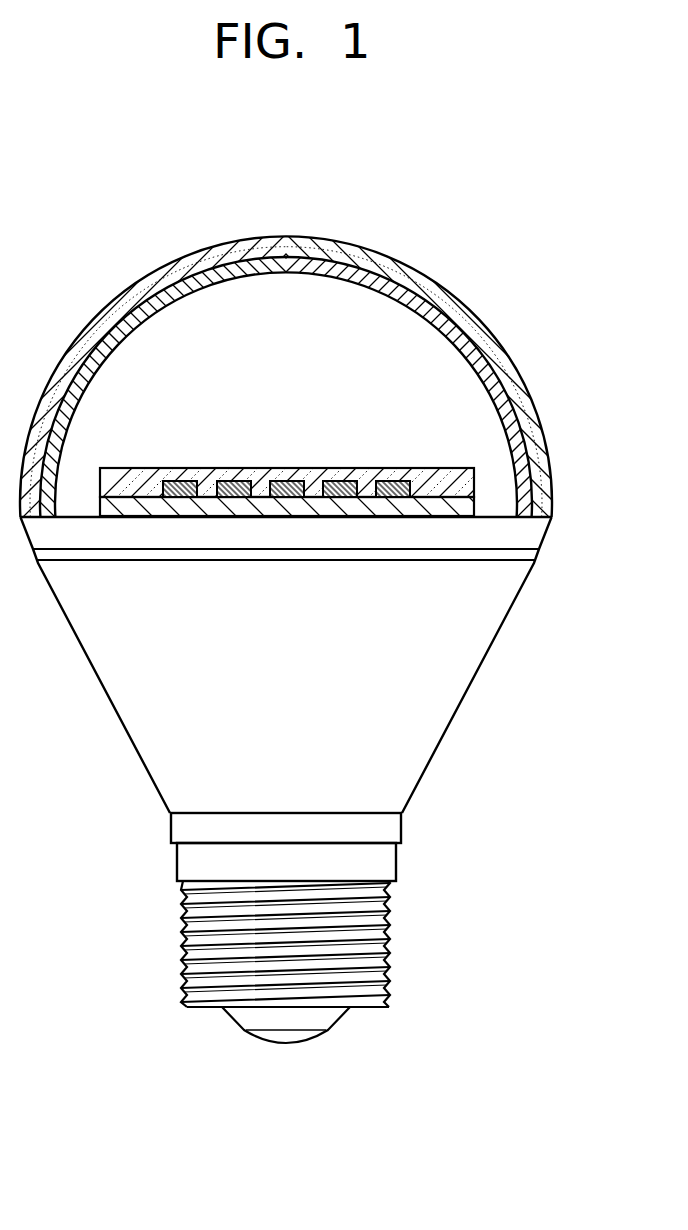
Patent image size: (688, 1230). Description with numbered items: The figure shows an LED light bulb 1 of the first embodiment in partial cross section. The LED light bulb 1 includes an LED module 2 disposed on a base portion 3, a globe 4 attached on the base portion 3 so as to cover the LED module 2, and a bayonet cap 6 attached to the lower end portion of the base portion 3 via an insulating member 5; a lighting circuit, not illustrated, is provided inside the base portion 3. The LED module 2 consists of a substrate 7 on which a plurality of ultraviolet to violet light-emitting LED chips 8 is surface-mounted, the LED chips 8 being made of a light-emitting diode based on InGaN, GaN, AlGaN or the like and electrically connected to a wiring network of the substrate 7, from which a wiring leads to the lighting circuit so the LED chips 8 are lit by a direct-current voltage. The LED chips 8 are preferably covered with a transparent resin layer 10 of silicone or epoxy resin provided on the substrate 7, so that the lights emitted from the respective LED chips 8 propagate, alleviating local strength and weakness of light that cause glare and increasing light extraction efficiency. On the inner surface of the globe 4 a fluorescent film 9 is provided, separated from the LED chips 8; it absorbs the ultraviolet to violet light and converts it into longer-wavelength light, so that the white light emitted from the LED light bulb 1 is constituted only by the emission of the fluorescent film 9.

The LED light bulb 1 is at (488, 241).
The LED module 2 is at (598, 433).
The base portion 3 is at (457, 703).
The globe 4 is at (174, 270).
The insulating member 5 is at (397, 862).
The bayonet cap 6 is at (391, 935).
The substrate 7 is at (474, 505).
The LED chips 8 is at (411, 492).
The fluorescent film 9 is at (260, 262).
The transparent resin layer 10 is at (461, 473).